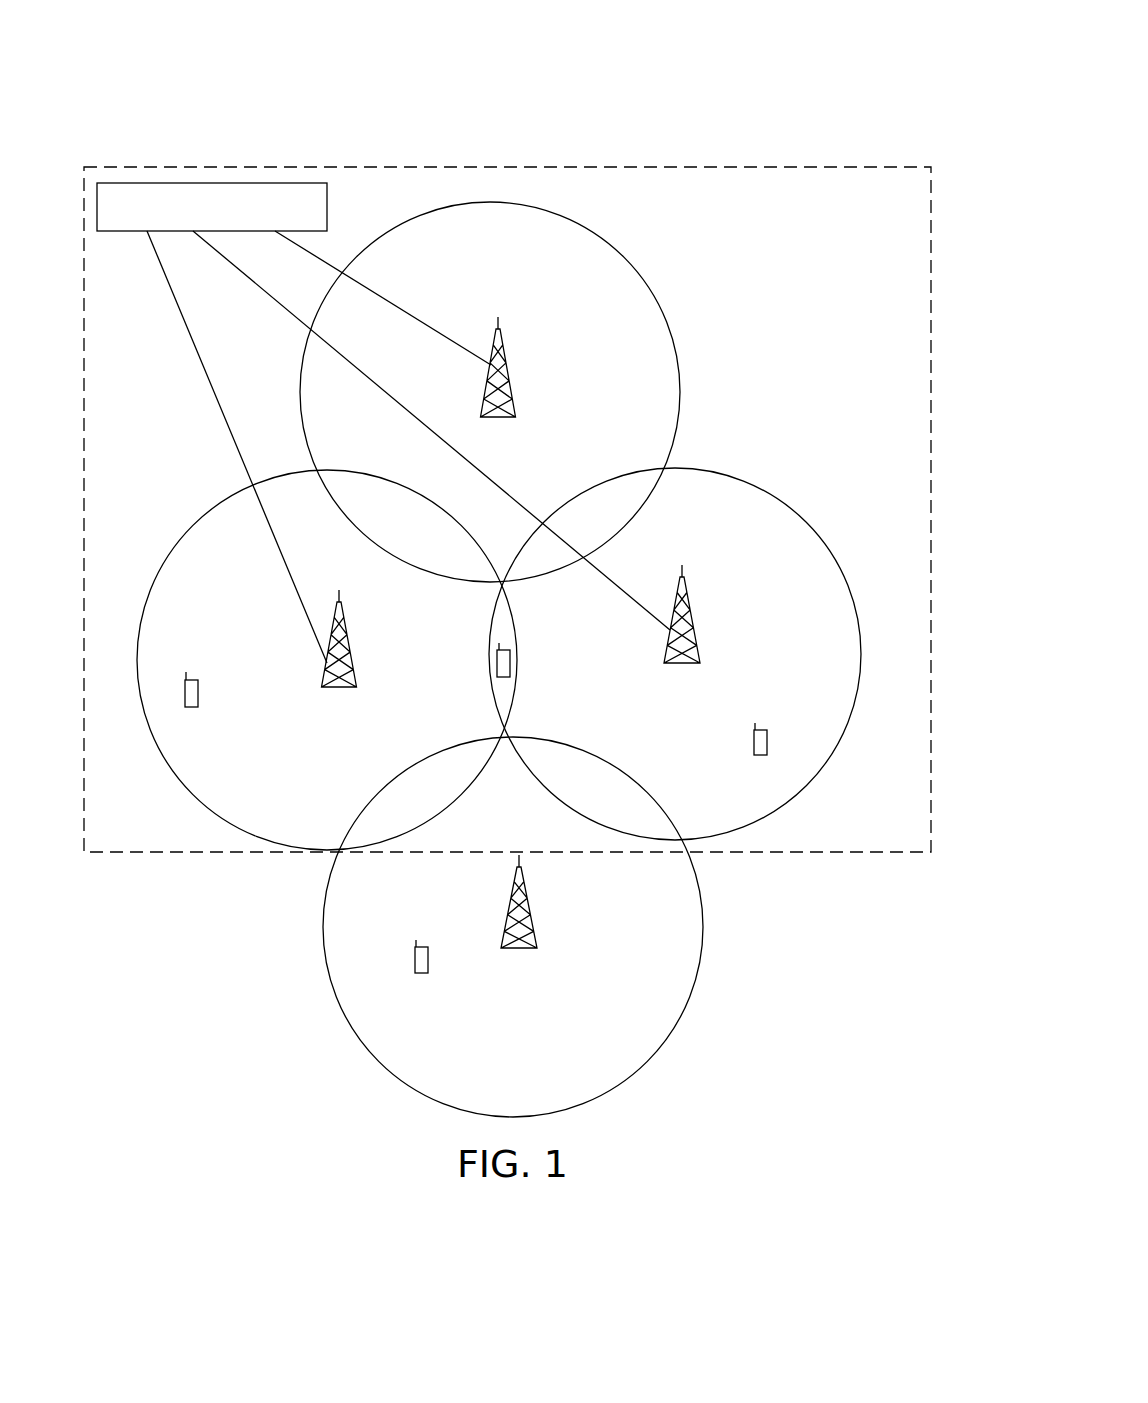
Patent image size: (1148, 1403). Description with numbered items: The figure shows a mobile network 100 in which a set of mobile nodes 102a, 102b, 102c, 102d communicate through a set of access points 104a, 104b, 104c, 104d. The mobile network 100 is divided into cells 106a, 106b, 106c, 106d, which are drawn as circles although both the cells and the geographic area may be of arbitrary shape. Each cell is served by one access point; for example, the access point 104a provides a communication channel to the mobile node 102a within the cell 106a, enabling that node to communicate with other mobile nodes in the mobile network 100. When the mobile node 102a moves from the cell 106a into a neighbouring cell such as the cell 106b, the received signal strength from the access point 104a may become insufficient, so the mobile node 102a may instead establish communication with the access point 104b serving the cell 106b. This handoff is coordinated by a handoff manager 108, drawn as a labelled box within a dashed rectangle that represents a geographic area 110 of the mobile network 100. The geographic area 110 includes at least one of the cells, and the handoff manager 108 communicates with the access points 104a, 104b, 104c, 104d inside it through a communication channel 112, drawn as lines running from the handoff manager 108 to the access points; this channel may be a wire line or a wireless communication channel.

The mobile network 100 is at (204, 46).
The mobile node 102a is at (512, 663).
The mobile node 102b is at (200, 685).
The mobile node 102c is at (768, 738).
The mobile node 102d is at (427, 958).
The access point 104a is at (333, 690).
The access point 104b is at (690, 610).
The access point 104c is at (508, 358).
The access point 104d is at (533, 935).
The cell 106a is at (142, 662).
The cell 106b is at (902, 638).
The cell 106c is at (680, 393).
The cell 106d is at (322, 927).
The handoff manager 108 is at (329, 207).
The geographic area 110 is at (628, 167).
The communication channel 112 is at (420, 278).